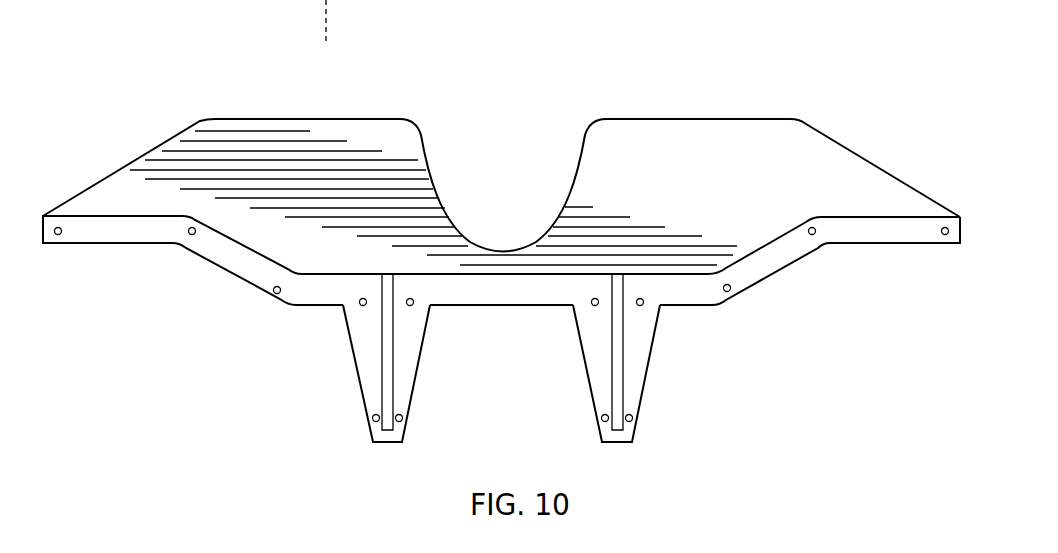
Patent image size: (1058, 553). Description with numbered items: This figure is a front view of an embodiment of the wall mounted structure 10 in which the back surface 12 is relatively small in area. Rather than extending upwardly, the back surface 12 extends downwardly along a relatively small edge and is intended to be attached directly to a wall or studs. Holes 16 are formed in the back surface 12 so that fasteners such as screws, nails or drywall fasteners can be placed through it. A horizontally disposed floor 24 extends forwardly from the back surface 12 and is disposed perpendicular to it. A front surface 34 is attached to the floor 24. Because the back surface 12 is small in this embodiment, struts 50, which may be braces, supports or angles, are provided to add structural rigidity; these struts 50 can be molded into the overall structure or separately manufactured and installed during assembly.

The wall mounted structure 10 is at (790, 89).
The back surface 12 is at (501, 262).
The holes 16 is at (246, 325).
The floor 24 is at (502, 329).
The front surface 34 is at (501, 171).
The struts 50 is at (468, 358).